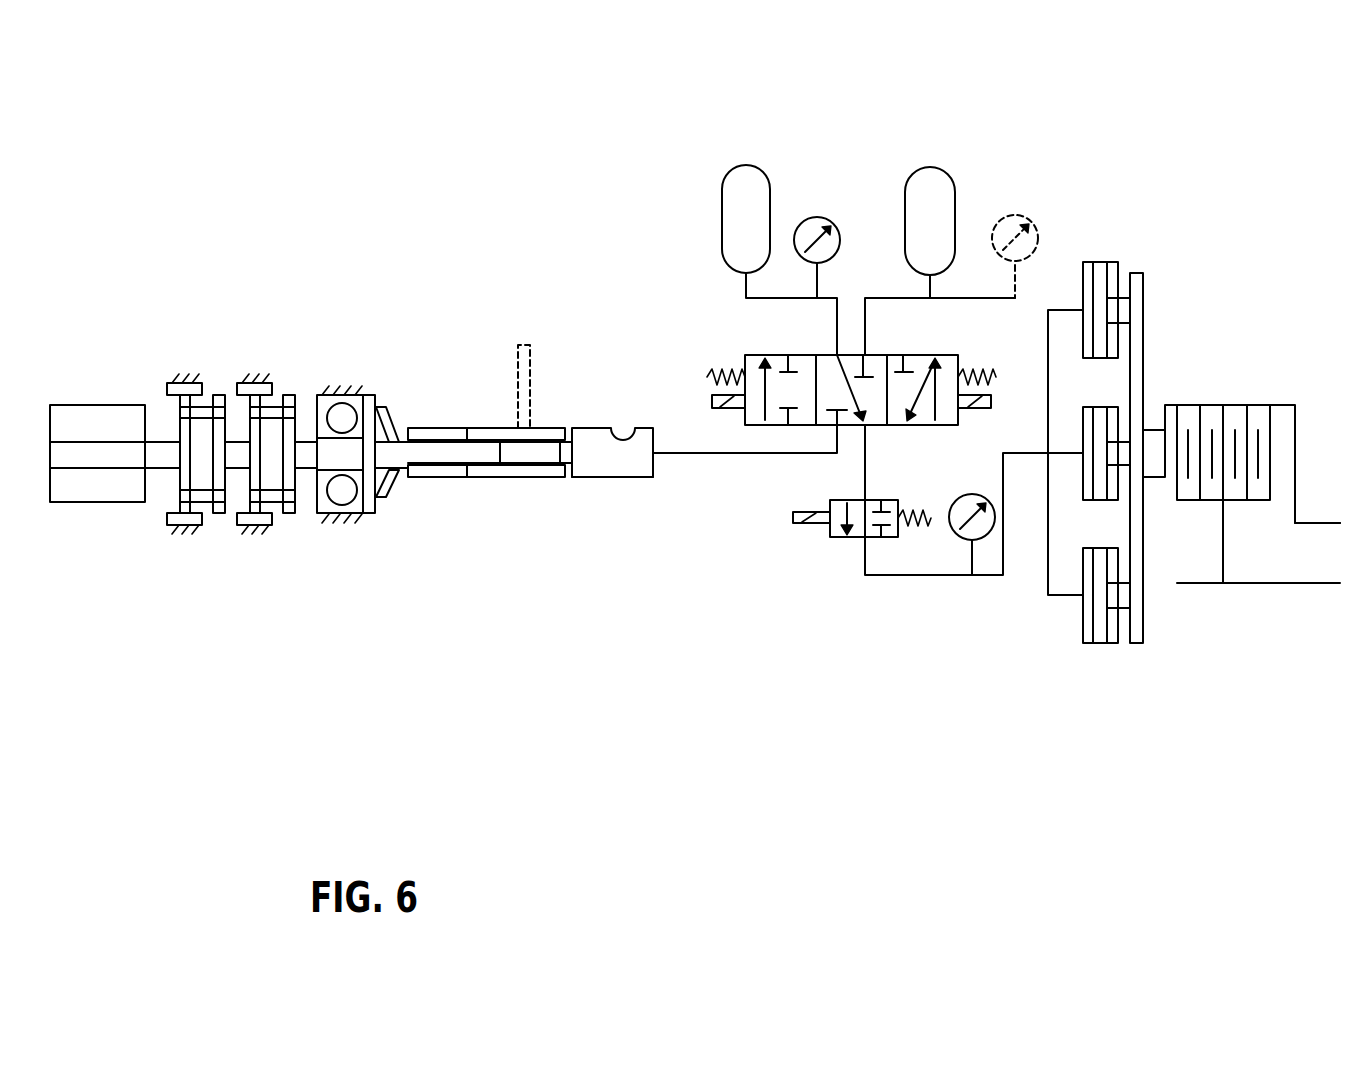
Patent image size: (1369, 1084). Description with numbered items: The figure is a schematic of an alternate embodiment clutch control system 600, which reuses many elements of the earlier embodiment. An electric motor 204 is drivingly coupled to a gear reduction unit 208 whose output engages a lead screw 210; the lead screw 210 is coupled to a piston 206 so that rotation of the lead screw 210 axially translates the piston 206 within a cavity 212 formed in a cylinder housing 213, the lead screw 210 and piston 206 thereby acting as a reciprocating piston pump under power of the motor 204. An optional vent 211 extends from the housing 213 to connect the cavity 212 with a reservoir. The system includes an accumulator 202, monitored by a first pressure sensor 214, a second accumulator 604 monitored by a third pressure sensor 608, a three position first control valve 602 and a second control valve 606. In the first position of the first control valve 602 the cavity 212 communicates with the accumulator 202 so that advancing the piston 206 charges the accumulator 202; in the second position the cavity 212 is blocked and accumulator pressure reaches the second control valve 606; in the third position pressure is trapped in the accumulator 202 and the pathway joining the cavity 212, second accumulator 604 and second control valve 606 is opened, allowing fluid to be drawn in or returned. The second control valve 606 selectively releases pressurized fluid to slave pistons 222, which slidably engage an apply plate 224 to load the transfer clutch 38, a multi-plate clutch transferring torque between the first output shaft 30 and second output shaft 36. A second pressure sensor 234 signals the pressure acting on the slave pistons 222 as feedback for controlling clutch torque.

The electric motor 204 is at (122, 415).
The gear reduction unit 208 is at (268, 357).
The lead screw 210 is at (410, 440).
The vent 211 is at (522, 345).
The cavity 212 is at (612, 428).
The cylinder housing 213 is at (628, 478).
The piston 206 is at (523, 475).
The accumulator 202 is at (726, 185).
The first pressure sensor 214 is at (812, 218).
The second accumulator 604 is at (940, 175).
The third pressure sensor 608 is at (1035, 228).
The first control valve 602 is at (805, 355).
The second control valve 606 is at (835, 540).
The second pressure sensor 234 is at (955, 540).
The transfer clutch 38 is at (1225, 377).
The second output shaft 36 is at (1310, 520).
The first output shaft 30 is at (1305, 587).
The apply plate 224 is at (1140, 636).
The slave pistons 222 is at (1098, 640).
The clutch control system 600 is at (673, 610).